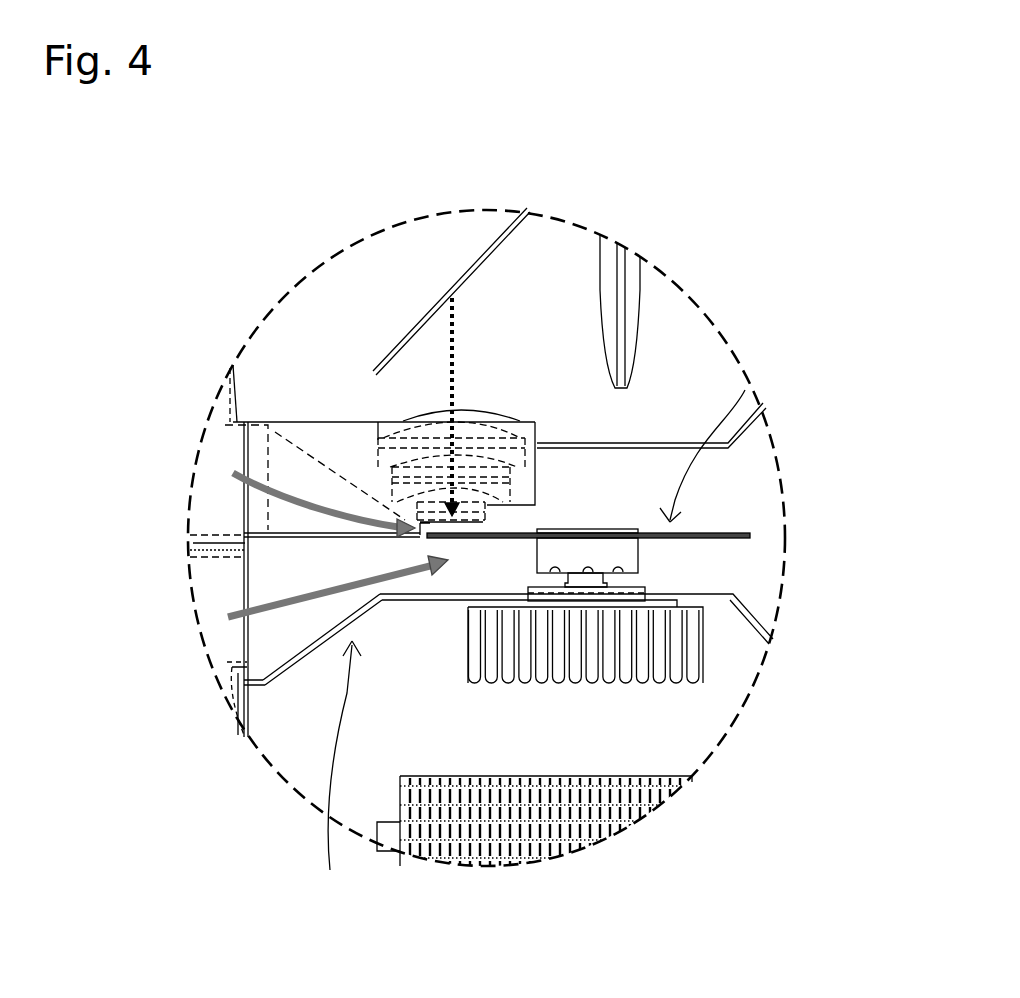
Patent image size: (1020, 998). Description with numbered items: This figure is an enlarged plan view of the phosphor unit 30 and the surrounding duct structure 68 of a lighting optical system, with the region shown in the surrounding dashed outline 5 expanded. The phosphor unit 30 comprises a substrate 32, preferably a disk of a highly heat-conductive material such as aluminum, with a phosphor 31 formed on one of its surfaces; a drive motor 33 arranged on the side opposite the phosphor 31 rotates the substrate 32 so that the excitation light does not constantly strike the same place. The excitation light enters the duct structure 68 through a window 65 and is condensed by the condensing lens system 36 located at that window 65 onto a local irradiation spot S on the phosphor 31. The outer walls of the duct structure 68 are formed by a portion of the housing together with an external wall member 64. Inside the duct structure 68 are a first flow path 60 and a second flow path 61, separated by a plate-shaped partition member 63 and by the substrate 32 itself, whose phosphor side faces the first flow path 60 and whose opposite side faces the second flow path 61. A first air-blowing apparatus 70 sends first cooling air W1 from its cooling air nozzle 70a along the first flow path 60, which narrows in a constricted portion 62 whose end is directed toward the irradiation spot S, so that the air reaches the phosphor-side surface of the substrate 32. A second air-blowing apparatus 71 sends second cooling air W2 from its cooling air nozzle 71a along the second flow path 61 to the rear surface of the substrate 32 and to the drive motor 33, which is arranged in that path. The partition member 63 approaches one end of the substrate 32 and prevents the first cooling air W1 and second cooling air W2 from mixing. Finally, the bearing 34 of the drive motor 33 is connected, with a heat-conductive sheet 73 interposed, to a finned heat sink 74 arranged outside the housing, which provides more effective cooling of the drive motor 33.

The imaging device body 5 is at (425, 598).
The phosphor unit 30 is at (700, 443).
The phosphor 31 is at (728, 533).
The substrate 32 is at (750, 537).
The drive motor 33 is at (628, 557).
The bearing 34 is at (598, 577).
The condensing lens system 36 is at (438, 411).
The first flow path 60 is at (312, 480).
The second flow path 61 is at (295, 633).
The constricted portion 62 is at (364, 490).
The partition member 63 is at (333, 537).
The external wall member 64 is at (670, 445).
The window 65 is at (486, 548).
The duct structure 68 is at (342, 767).
The first air-blowing apparatus 70 is at (200, 480).
The cooling air nozzle 70a is at (248, 462).
The second air-blowing apparatus 71 is at (203, 628).
The cooling air nozzle 71a is at (248, 592).
The heat-conductive sheet 73 is at (568, 587).
The heat sink 74 is at (703, 653).
The irradiation spot S is at (476, 552).
The first cooling air W1 is at (280, 500).
The second cooling air W2 is at (289, 598).